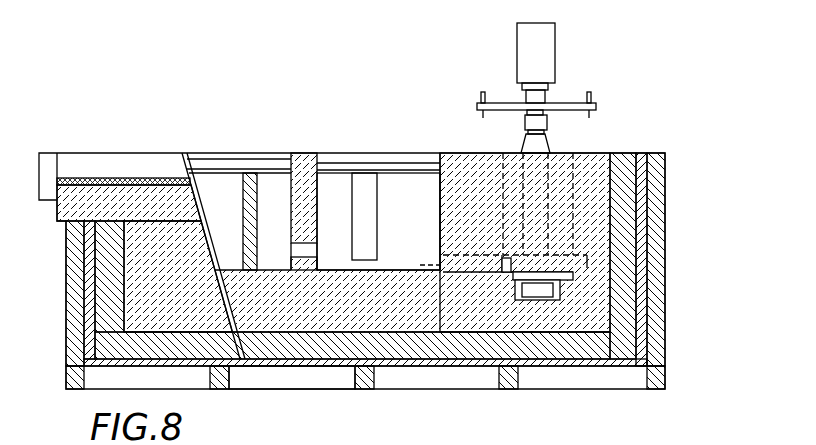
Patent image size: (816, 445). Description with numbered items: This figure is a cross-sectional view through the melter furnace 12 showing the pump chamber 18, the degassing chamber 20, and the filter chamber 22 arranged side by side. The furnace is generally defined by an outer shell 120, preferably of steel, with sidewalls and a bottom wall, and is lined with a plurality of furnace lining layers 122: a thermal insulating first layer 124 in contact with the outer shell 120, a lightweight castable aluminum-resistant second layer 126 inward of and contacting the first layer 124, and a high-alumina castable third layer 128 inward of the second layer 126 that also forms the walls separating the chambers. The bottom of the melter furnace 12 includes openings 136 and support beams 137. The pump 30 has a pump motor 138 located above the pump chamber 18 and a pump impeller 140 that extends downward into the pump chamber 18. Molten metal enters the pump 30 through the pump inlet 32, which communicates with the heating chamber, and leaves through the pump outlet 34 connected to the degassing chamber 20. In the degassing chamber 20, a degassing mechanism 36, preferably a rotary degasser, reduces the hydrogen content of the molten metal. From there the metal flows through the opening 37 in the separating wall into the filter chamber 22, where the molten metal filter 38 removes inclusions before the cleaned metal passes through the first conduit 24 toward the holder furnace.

The melter furnace 12 is at (640, 68).
The pump chamber 18 is at (573, 168).
The degassing chamber 20 is at (435, 190).
The filter chamber 22 is at (284, 180).
The first conduit 24 is at (112, 190).
The pump 30 is at (490, 70).
The pump inlet 32 is at (556, 292).
The pump outlet 34 is at (445, 265).
The degassing mechanism 36 is at (365, 230).
The opening 37 is at (312, 270).
The molten metal filter 38 is at (240, 180).
The outer shell 120 is at (658, 303).
The furnace lining layers 122 is at (684, 241).
The first layer 124 is at (675, 259).
The second layer 126 is at (628, 183).
The third layer 128 is at (605, 177).
The openings 136 is at (292, 375).
The support beams 137 is at (363, 390).
The pump motor 138 is at (557, 47).
The pump impeller 140 is at (503, 283).